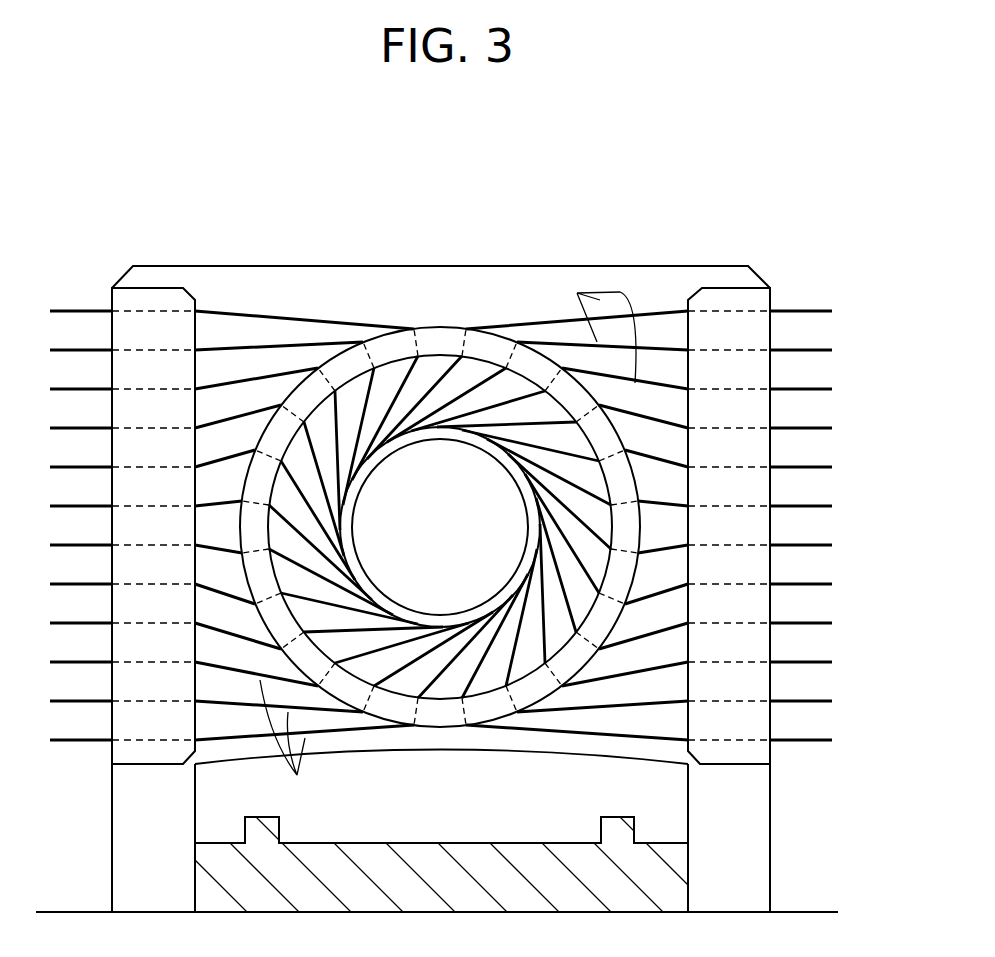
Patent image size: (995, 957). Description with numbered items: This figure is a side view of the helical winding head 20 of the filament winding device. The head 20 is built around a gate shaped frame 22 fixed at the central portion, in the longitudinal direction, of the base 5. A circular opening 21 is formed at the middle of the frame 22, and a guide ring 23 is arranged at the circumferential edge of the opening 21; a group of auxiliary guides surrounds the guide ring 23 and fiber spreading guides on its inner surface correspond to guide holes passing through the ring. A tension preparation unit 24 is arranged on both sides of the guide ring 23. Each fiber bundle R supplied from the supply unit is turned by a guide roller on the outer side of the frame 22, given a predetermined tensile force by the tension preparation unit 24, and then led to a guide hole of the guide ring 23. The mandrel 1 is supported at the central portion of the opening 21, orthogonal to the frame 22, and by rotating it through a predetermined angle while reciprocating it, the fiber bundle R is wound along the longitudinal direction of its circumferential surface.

The mandrel 1 is at (455, 543).
The base 5 is at (687, 875).
The helical winding head 20 is at (467, 562).
The circular opening 21 is at (447, 354).
The gate shaped frame 22 is at (489, 275).
The guide ring 23 is at (345, 355).
The tension preparation unit 24 is at (160, 300).
The fiber bundle R is at (448, 541).